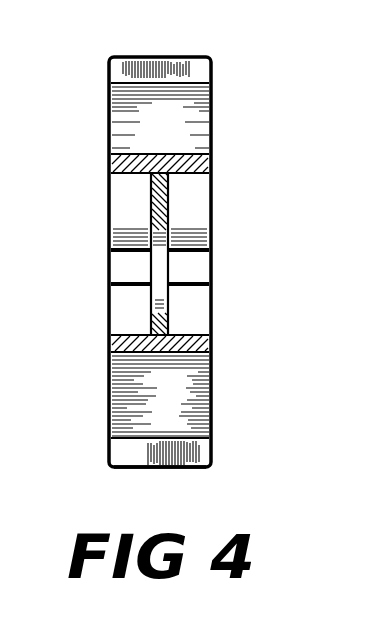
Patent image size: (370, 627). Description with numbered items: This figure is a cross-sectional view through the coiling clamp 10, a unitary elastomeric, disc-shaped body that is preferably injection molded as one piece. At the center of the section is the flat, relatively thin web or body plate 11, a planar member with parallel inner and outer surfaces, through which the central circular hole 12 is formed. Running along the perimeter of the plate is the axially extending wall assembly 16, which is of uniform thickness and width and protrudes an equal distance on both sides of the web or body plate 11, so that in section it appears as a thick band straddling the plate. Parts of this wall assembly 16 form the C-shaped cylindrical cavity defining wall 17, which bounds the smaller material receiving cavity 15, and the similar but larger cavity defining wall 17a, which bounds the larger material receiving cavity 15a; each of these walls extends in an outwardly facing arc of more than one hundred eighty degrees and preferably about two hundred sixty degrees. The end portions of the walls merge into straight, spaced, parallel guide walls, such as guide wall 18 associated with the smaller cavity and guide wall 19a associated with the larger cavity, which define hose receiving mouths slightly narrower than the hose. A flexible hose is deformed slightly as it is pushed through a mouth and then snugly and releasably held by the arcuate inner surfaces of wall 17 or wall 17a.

The coiling clamp 10 is at (109, 301).
The web or body plate 11 is at (171, 321).
The central circular hole 12 is at (155, 223).
The material receiving cavity 15 is at (207, 126).
The material receiving cavity 15a is at (208, 391).
The wall assembly 16 is at (121, 469).
The cavity defining wall 17 is at (111, 185).
The cavity defining wall 17a is at (204, 179).
The guide wall 18 is at (168, 468).
The guide wall 19a is at (162, 63).